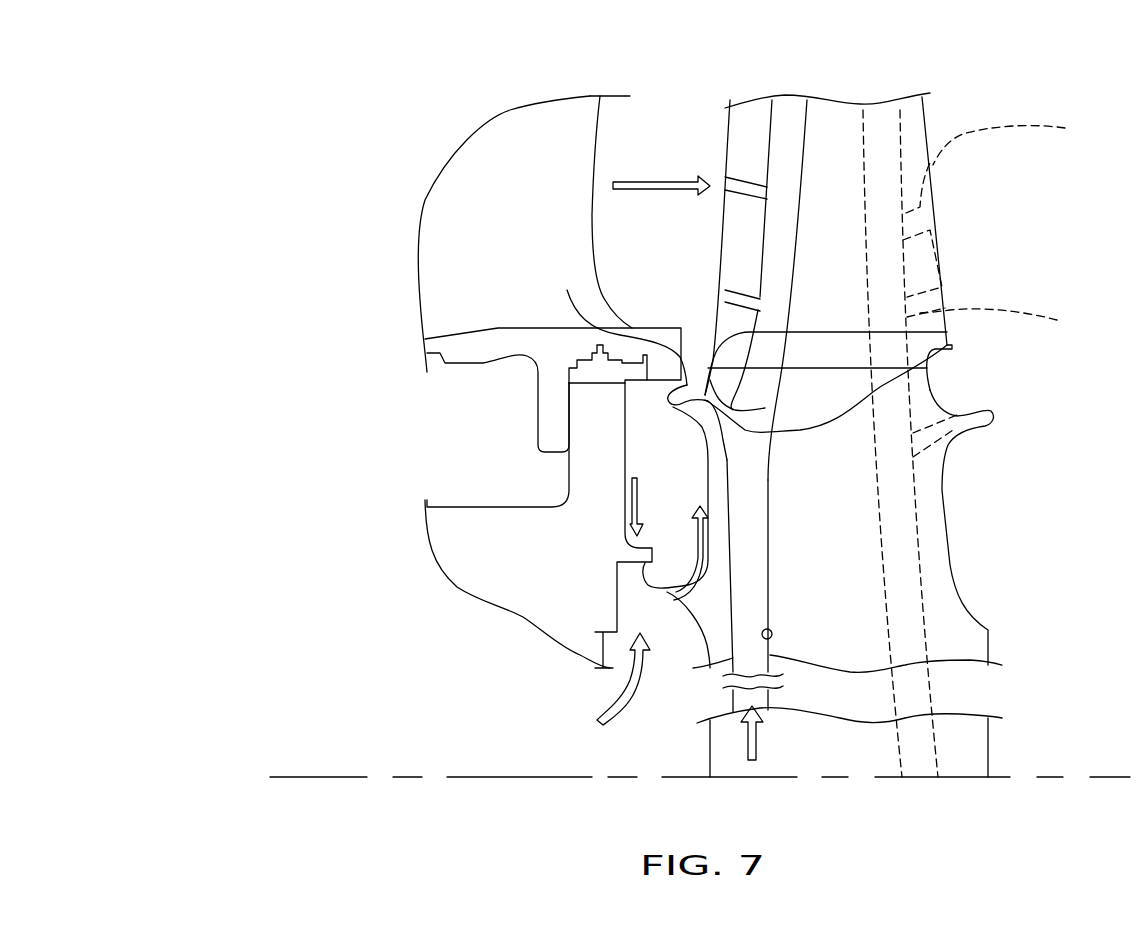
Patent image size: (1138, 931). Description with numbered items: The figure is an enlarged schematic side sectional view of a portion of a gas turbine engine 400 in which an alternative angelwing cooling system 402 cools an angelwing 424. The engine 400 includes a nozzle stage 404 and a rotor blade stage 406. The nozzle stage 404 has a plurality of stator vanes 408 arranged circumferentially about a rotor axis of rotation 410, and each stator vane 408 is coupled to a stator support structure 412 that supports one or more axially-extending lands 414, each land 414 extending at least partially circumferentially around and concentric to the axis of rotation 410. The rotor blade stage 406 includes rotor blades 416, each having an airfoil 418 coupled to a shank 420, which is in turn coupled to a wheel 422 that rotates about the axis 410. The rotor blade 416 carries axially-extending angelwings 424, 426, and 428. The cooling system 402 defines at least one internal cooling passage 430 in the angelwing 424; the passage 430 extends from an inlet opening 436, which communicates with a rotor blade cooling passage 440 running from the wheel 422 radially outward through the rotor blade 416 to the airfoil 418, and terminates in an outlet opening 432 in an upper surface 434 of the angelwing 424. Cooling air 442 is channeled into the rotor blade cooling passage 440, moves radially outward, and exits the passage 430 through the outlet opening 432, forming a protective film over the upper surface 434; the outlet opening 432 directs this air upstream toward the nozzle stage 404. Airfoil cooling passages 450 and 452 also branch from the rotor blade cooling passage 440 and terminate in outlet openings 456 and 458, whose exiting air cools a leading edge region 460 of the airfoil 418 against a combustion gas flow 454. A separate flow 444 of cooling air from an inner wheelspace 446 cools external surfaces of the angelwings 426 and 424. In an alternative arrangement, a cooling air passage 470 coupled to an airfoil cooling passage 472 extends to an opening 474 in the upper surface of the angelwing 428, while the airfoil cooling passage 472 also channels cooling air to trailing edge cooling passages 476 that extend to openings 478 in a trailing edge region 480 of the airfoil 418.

The gas turbine engine 400 is at (325, 101).
The angelwing cooling system 402 is at (943, 337).
The nozzle stage 404 is at (421, 330).
The rotor blade stage 406 is at (984, 270).
The stator vane 408 is at (540, 232).
The rotor axis of rotation 410 is at (304, 771).
The stator support structure 412 is at (565, 560).
The land 414 is at (652, 562).
The rotor blade 416 is at (941, 191).
The airfoil 418 is at (863, 232).
The shank 420 is at (868, 462).
The wheel 422 is at (885, 769).
The angelwing 424 is at (673, 412).
The angelwing 426 is at (667, 592).
The angelwing 428 is at (993, 423).
The internal cooling passage 430 is at (789, 406).
The outlet opening 432 is at (700, 394).
The upper surface 434 is at (616, 322).
The inlet opening 436 is at (736, 438).
The rotor blade cooling passage 440 is at (772, 634).
The cooling air 442 is at (710, 720).
The separate flow of cooling air 444 is at (608, 718).
The inner wheelspace 446 is at (435, 704).
The airfoil cooling passage 450 is at (742, 290).
The airfoil cooling passage 452 is at (748, 180).
The combustion gas flow 454 is at (651, 181).
The outlet opening 456 is at (723, 291).
The outlet opening 458 is at (720, 192).
The leading edge region 460 is at (717, 155).
The cooling air passage 470 is at (957, 455).
The airfoil cooling passage 472 is at (922, 572).
The opening 474 is at (963, 416).
The trailing edge cooling passage 476 is at (1018, 229).
The opening 478 is at (951, 293).
The trailing edge region 480 is at (968, 106).